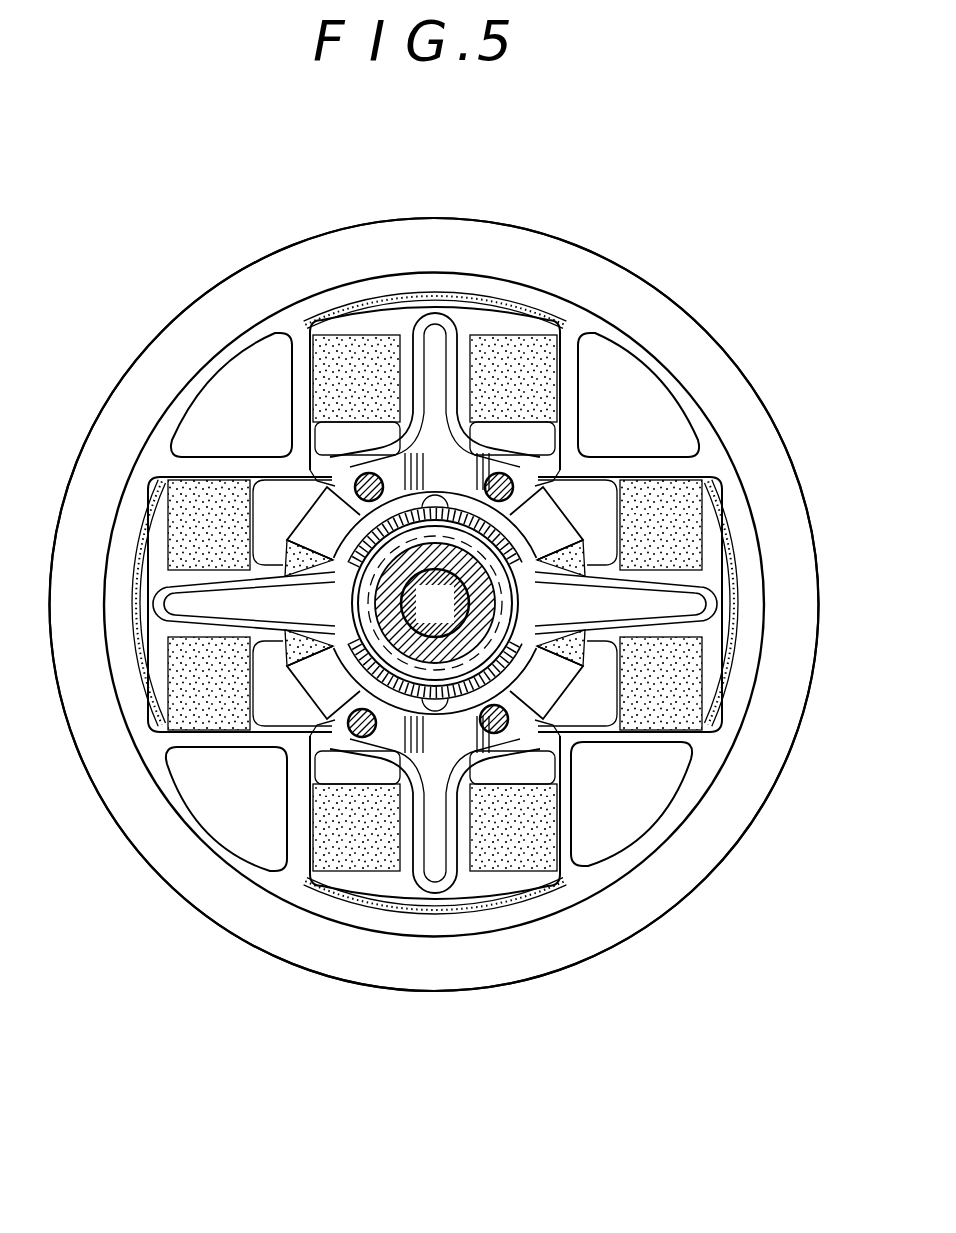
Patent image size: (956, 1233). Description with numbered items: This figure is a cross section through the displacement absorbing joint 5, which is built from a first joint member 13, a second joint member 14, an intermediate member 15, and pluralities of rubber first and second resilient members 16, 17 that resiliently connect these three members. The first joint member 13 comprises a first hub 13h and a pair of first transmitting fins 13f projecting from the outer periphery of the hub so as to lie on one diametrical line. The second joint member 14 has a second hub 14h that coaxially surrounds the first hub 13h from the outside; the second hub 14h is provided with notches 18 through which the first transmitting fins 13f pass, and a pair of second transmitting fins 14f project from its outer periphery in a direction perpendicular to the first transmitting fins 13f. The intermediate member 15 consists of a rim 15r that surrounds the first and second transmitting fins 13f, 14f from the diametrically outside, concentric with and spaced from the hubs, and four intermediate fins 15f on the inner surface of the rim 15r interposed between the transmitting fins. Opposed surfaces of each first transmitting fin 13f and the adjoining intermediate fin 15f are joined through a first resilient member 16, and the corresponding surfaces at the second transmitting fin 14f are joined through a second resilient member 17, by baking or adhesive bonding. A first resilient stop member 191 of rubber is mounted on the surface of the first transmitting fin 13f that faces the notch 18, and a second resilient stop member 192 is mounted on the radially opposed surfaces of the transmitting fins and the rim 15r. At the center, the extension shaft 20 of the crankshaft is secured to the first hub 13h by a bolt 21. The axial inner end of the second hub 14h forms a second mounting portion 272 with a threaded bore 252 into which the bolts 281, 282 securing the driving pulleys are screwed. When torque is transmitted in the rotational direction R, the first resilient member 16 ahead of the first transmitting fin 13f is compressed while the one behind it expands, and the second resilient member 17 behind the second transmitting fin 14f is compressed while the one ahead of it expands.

The displacement absorbing joint 5 is at (650, 262).
The first joint member 13 is at (550, 543).
The first transmitting fins 13f is at (147, 597).
The first hub 13h is at (360, 603).
The second joint member 14 is at (313, 472).
The second transmitting fins 14f is at (444, 310).
The second hub 14h is at (306, 486).
The intermediate member 15 is at (706, 345).
The intermediate fins 15f is at (296, 372).
The rim 15r is at (753, 407).
The first resilient members 16 is at (177, 518).
The second resilient members 17 is at (357, 350).
The notches 18 is at (358, 730).
The first resilient stop member 191 is at (293, 553).
The second resilient stop member 192 is at (428, 303).
The extension shaft 20 is at (478, 609).
The bolt 21 is at (446, 621).
The threaded bore 252 is at (348, 470).
The second mounting portion 272 is at (427, 462).
The bolt 281 is at (315, 712).
The bolt 282 is at (520, 458).